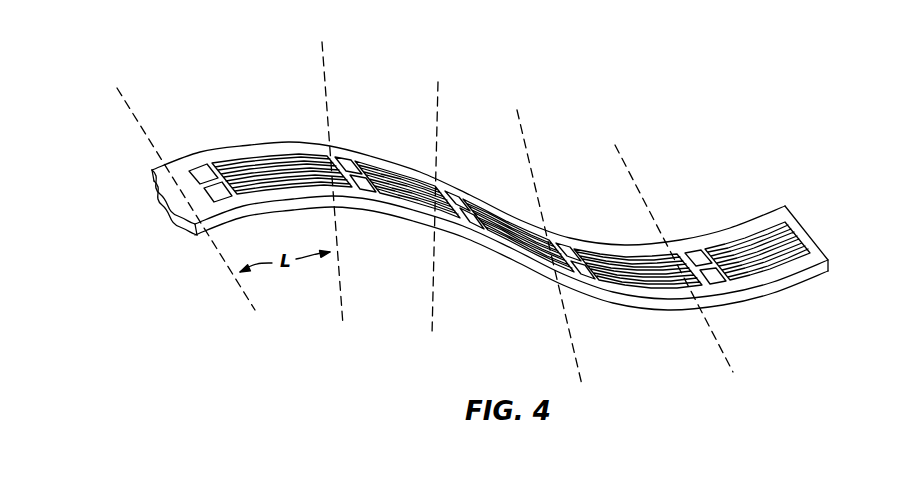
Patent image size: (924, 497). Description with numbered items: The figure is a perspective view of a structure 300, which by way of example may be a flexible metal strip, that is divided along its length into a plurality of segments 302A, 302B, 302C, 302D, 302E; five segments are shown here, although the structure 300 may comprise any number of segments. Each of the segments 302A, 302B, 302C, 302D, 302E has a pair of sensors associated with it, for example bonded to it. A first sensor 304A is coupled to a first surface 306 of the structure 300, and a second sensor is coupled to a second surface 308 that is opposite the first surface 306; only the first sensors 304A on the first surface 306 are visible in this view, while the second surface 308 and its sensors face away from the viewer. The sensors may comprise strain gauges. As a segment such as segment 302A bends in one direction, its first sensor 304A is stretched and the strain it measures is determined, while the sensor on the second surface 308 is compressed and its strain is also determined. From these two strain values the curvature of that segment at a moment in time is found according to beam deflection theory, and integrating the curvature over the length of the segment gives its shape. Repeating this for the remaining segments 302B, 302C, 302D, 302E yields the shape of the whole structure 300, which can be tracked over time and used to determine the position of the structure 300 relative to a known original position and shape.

The structure 300 is at (148, 203).
The segment 302A is at (240, 90).
The segment 302B is at (380, 103).
The segment 302C is at (480, 143).
The segment 302D is at (570, 162).
The segment 302E is at (717, 143).
The first sensor 304A is at (277, 176).
The first surface 306 is at (177, 168).
The second surface 308 is at (183, 212).